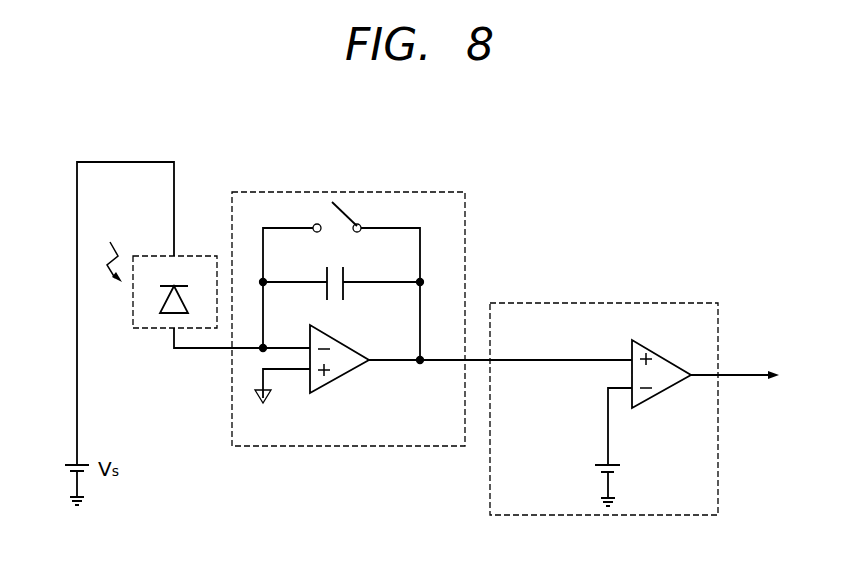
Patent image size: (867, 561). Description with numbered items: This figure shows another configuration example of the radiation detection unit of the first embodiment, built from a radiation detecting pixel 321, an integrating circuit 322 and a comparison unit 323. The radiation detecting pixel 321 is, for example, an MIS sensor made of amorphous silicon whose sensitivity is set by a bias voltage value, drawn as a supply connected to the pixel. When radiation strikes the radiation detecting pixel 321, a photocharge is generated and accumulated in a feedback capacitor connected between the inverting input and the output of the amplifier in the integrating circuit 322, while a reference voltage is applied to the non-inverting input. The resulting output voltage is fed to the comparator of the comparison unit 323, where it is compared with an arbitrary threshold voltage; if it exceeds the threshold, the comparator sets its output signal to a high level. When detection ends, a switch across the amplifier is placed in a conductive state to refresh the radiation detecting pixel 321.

The radiation detecting pixel 321 is at (150, 255).
The integrating circuit 322 is at (395, 191).
The comparison unit 323 is at (653, 302).